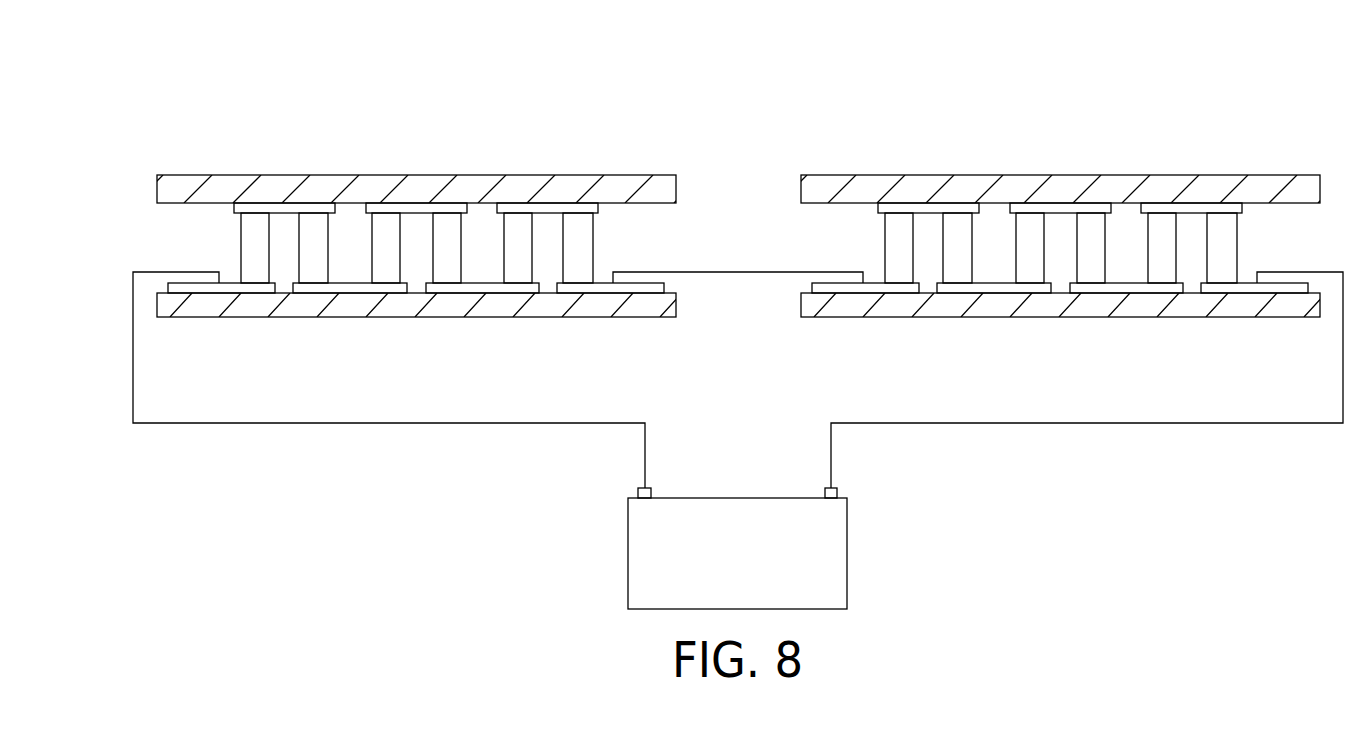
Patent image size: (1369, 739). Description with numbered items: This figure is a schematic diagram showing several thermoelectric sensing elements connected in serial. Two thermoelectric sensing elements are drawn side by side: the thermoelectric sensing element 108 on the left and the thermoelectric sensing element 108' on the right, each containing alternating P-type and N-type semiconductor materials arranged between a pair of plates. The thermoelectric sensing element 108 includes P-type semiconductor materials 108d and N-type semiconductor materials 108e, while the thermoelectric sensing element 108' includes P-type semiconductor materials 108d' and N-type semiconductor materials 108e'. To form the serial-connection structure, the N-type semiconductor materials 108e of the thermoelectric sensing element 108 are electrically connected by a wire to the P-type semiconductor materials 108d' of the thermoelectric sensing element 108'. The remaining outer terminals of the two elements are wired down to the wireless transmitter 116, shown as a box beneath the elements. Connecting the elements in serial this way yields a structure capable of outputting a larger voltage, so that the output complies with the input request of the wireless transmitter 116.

The thermoelectric sensing element 108 is at (387, 193).
The thermoelectric sensing element 108' is at (1050, 193).
The P-type semiconductor materials 108d is at (206, 248).
The N-type semiconductor materials 108e is at (627, 248).
The P-type semiconductor materials 108d' is at (845, 248).
The N-type semiconductor materials 108e' is at (1275, 248).
The wireless transmitter 116 is at (847, 555).